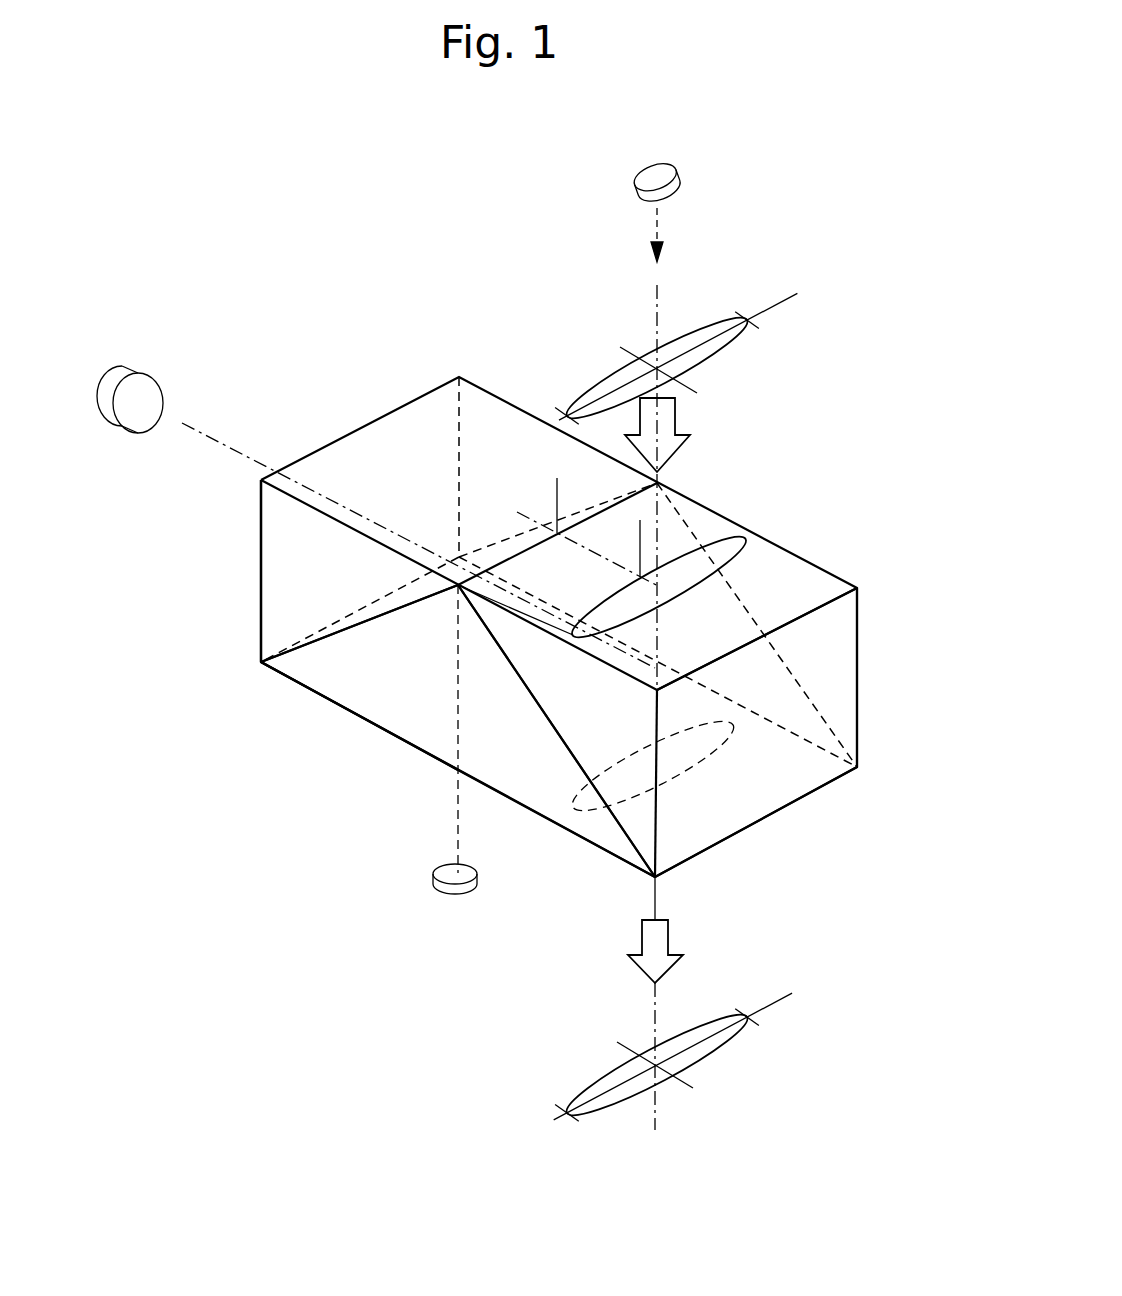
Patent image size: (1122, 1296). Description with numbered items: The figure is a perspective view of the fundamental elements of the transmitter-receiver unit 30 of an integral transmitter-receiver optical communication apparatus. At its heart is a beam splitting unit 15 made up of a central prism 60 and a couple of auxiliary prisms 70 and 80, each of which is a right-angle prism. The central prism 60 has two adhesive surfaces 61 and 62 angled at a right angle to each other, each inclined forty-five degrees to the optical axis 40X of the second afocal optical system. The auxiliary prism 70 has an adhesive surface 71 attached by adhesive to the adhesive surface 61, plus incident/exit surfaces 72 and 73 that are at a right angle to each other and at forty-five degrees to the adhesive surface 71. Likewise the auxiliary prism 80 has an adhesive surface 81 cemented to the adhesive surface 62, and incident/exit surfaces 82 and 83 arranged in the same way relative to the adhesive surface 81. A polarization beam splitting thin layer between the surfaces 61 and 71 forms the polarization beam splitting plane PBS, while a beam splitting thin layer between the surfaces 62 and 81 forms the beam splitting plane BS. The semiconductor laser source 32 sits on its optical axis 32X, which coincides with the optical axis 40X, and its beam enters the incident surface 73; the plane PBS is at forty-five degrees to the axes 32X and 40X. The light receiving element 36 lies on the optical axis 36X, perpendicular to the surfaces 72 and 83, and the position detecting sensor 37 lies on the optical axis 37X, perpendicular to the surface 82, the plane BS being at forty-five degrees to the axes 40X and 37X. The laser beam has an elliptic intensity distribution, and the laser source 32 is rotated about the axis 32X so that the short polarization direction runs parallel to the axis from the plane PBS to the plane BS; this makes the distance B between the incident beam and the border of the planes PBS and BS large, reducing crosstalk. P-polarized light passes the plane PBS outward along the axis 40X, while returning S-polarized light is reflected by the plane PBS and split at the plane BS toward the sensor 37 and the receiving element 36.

The transmitter-receiver unit 30 is at (852, 146).
The beam splitting unit 15 is at (847, 560).
The semiconductor laser source 32 is at (677, 176).
The optical axis of the semiconductor laser source 32X is at (660, 305).
The light receiving element 36 is at (135, 422).
The optical axis of the light receiving element 36X is at (243, 450).
The position detecting sensor 37 is at (453, 882).
The optical axis of the position detecting sensor 37X is at (455, 798).
The optical axis of the second afocal optical system 40X is at (655, 897).
The central prism 60 is at (540, 780).
The adhesive surface 61 is at (743, 857).
The adhesive surface 71 is at (630, 838).
The adhesive surface 62 is at (309, 701).
The adhesive surface 81 is at (377, 630).
The auxiliary prism 70 is at (733, 795).
The incident/exit surface 72 is at (837, 668).
The incident/exit surface 73 is at (773, 557).
The auxiliary prism 80 is at (295, 586).
The incident/exit surface 82 is at (355, 713).
The incident/exit surface 83 is at (285, 531).
The beam splitting plane BS is at (310, 647).
The polarization beam splitting plane PBS is at (510, 665).
The distance B is at (640, 532).